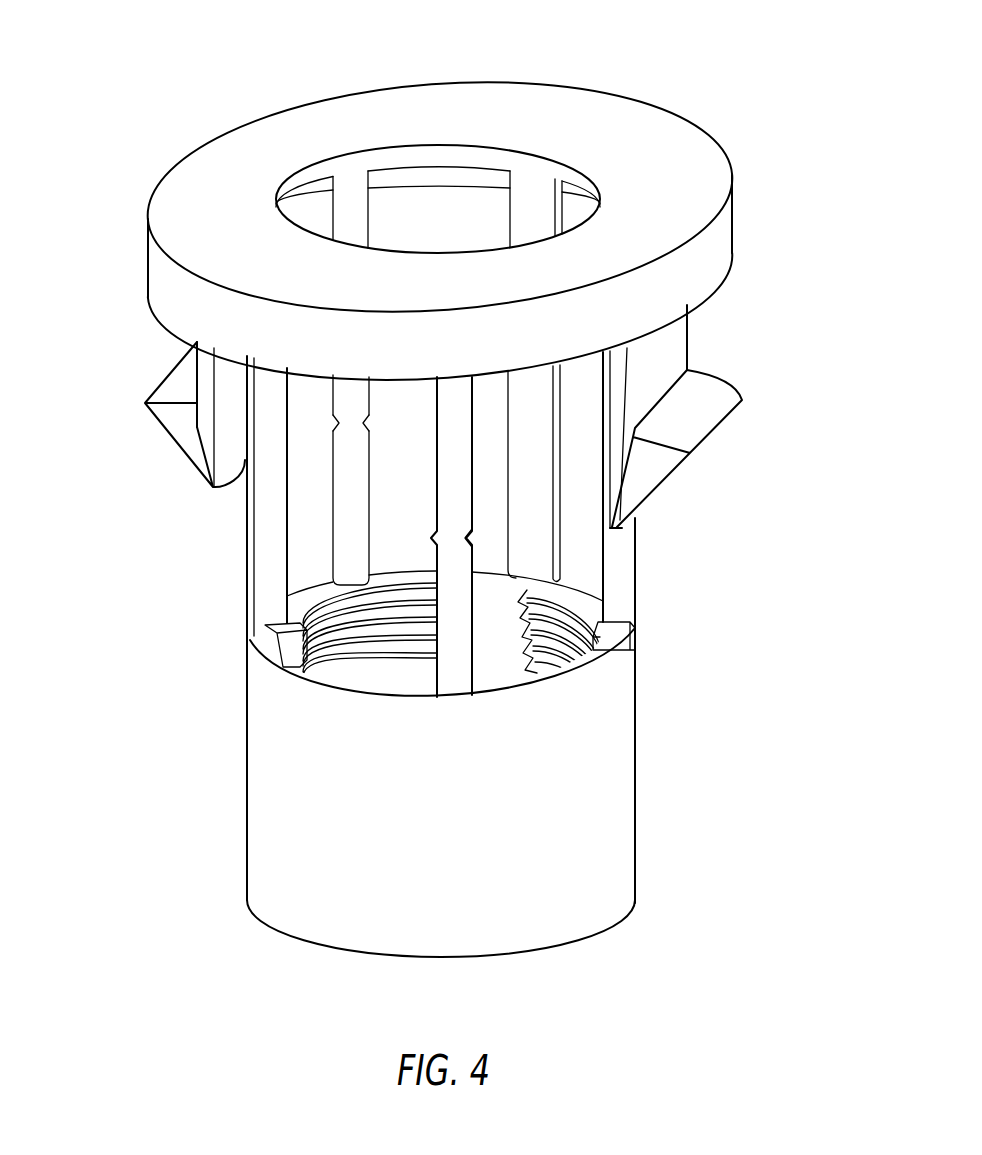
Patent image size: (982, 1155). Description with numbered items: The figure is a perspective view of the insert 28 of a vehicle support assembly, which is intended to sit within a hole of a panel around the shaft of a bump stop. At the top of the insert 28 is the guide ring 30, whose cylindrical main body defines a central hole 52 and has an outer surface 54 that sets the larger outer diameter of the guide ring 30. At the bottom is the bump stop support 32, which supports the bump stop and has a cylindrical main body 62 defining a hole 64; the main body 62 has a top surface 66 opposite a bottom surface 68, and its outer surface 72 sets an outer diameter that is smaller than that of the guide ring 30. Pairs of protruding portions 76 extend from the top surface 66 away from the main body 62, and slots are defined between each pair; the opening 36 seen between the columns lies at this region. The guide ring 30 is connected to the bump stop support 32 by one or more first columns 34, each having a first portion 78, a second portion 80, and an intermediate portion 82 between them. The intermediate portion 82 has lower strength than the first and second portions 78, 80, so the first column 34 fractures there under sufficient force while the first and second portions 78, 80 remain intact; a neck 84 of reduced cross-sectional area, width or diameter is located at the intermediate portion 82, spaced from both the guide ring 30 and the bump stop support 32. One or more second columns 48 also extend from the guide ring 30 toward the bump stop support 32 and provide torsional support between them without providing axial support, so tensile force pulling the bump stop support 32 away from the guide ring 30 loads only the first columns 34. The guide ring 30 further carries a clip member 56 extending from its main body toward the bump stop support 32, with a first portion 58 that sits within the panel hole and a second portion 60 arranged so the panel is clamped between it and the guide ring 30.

The insert 28 is at (550, 46).
The guide ring 30 is at (353, 117).
The bump stop support 32 is at (625, 853).
The first column 34 is at (347, 502).
The window opening 36 is at (258, 638).
The second column 48 is at (265, 562).
The hole 52 is at (440, 155).
The outer surface 54 is at (160, 277).
The clip member 56 is at (213, 387).
The first portion 58 is at (207, 363).
The second portion 60 is at (170, 433).
The main body 62 is at (625, 810).
The hole 64 is at (558, 620).
The top surface 66 is at (350, 677).
The bottom surface 68 is at (300, 937).
The outer surface 72 is at (638, 757).
The protruding portion 76 is at (293, 650).
The first portion 78 is at (360, 392).
The second portion 80 is at (360, 465).
The intermediate portion 82 is at (468, 545).
The neck 84 is at (331, 429).